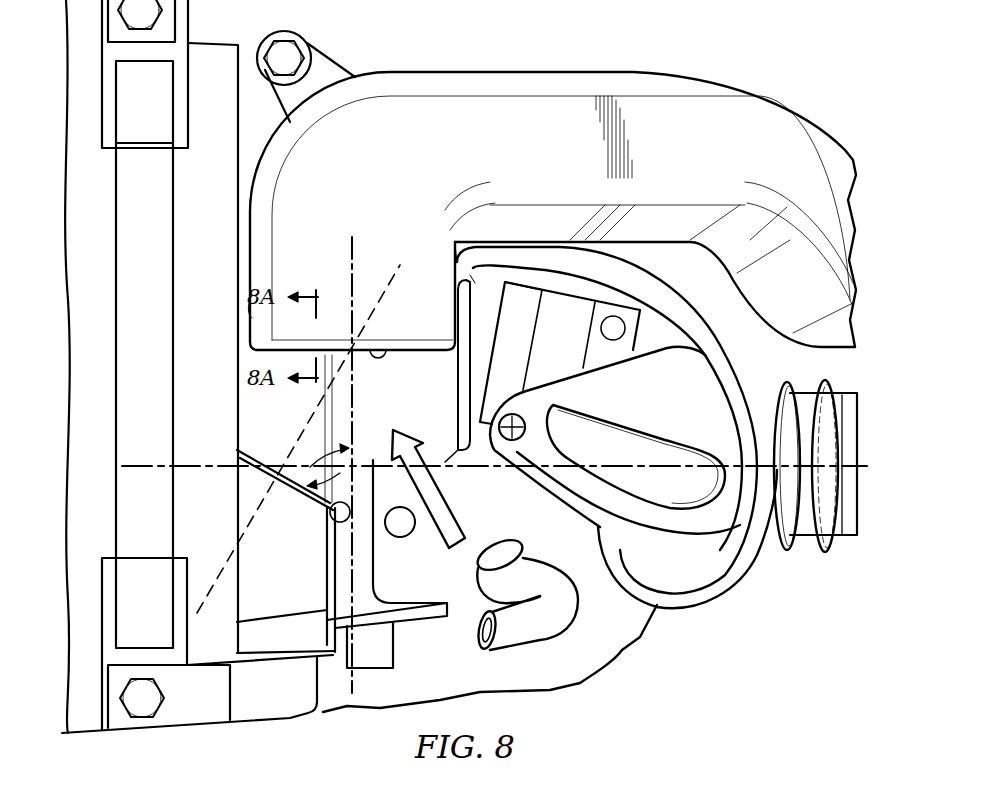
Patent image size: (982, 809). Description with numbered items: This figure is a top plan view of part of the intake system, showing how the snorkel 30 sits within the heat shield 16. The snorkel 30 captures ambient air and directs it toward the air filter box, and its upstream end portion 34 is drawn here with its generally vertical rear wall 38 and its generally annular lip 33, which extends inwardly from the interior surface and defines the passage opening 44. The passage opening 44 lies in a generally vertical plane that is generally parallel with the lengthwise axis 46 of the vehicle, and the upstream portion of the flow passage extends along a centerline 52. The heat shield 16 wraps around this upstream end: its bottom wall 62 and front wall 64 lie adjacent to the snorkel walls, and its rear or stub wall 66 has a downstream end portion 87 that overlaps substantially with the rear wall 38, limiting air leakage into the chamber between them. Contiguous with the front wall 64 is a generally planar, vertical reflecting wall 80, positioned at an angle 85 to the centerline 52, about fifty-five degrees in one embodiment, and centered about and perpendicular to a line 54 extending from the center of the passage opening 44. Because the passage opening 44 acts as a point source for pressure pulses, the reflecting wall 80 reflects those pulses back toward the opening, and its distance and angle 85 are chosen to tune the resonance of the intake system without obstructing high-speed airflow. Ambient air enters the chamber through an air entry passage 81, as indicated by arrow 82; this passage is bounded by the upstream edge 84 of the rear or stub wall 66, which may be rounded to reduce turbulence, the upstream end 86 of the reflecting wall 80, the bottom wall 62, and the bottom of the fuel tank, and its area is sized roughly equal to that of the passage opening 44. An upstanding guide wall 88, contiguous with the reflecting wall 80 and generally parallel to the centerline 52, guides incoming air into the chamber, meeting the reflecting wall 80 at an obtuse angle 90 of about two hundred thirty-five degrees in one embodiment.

The heat shield 16 is at (272, 727).
The snorkel 30 is at (549, 68).
The generally annular lip 33 is at (380, 348).
The upstream end portion 34 is at (247, 263).
The rear wall 38 is at (490, 288).
The passage opening 44 is at (404, 365).
The lengthwise axis 46 is at (152, 462).
The centerline 52 is at (350, 243).
The line 54 is at (258, 514).
The bottom wall 62 is at (388, 400).
The front wall 64 is at (249, 315).
The rear or stub wall 66 is at (528, 358).
The reflecting wall 80 is at (257, 462).
The air entry passage 81 is at (434, 460).
The arrow 82 is at (445, 535).
The upstream edge 84 is at (492, 430).
The angle 85 is at (297, 478).
The upstream end 86 is at (333, 516).
The downstream end portion 87 is at (472, 310).
The guide wall 88 is at (327, 568).
The angle 90 is at (348, 535).